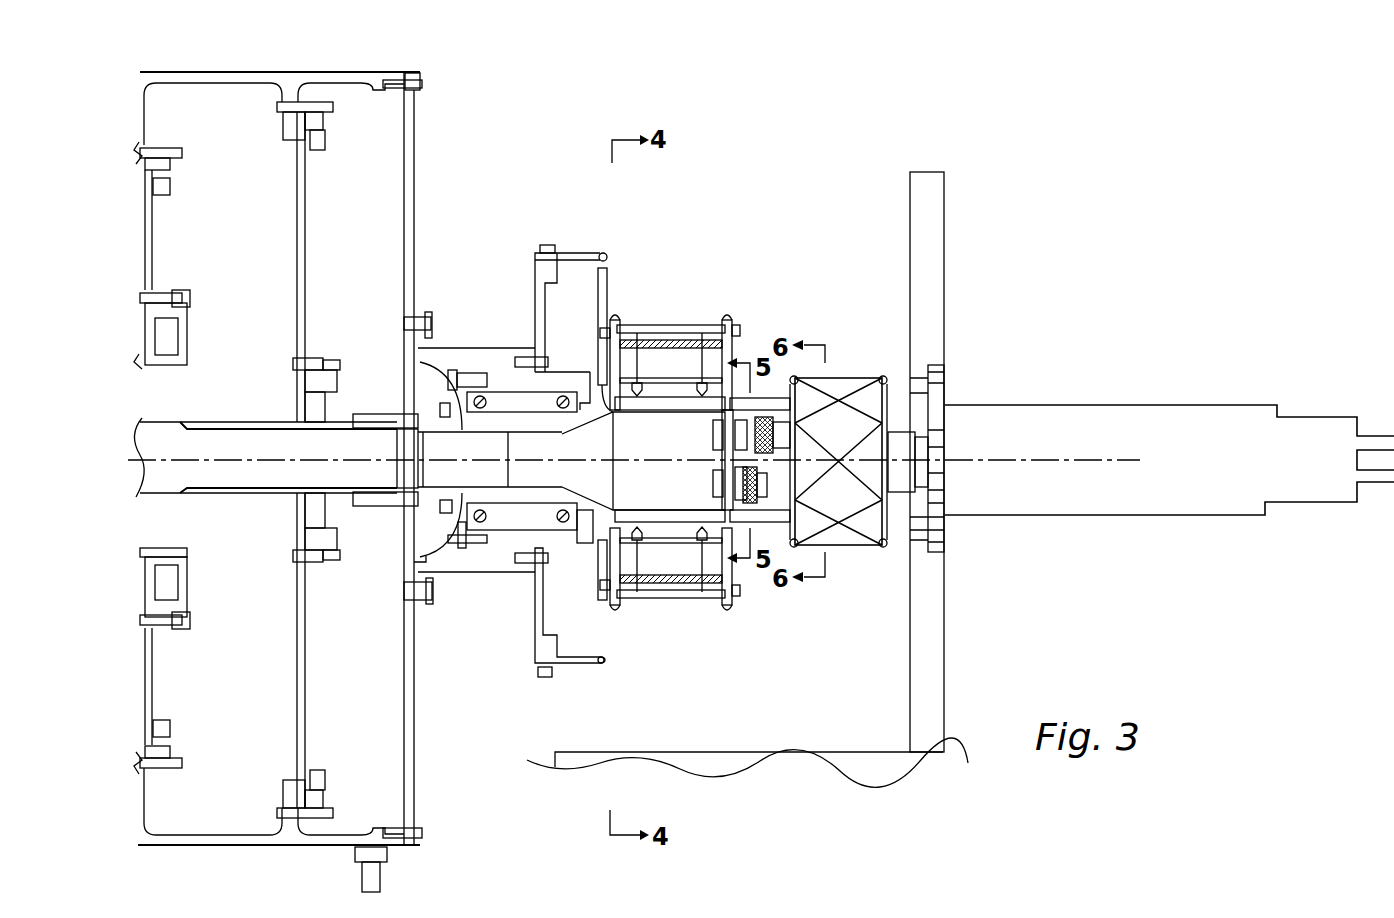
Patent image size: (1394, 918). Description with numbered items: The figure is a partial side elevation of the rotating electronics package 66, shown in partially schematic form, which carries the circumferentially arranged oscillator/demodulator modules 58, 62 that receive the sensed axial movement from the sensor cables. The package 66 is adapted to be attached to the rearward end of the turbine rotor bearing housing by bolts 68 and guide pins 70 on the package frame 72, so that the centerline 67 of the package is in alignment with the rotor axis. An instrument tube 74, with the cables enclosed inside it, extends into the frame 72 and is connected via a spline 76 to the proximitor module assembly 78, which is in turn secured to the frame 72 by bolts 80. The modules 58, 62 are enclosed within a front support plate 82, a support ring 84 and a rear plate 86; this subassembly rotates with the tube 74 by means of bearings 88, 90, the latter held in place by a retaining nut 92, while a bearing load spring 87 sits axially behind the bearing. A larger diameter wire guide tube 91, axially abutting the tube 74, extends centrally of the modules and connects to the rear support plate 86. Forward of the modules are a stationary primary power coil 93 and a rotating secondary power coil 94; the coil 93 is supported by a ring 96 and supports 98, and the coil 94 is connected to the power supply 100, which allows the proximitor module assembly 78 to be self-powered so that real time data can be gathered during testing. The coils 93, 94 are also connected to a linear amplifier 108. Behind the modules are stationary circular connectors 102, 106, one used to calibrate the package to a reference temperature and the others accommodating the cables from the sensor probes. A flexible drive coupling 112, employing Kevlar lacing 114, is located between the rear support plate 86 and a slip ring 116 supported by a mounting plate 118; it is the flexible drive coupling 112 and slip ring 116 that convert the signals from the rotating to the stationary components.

The oscillator/demodulator module 58 is at (656, 355).
The oscillator/demodulator module 62 is at (680, 573).
The electronics package 66 is at (768, 100).
The centerline 67 is at (309, 462).
The bolts 68 is at (170, 298).
The guide pins 70 is at (170, 150).
The package frame 72 is at (195, 66).
The instrument tube 74 is at (343, 428).
The spline 76 is at (462, 430).
The proximitor module assembly 78 is at (496, 210).
The bolts 80 is at (418, 328).
The front support plate 82 is at (612, 527).
The support ring 84 is at (652, 598).
The rear plate 86 is at (745, 592).
The bearing load spring 87 is at (580, 527).
The bearing 88 is at (478, 530).
The bearing 90 is at (603, 495).
The wire guide tube 91 is at (697, 512).
The retaining nut 92 is at (413, 562).
The stationary primary power coil 93 is at (603, 253).
The rotating secondary power coil 94 is at (608, 282).
The ring 96 is at (528, 622).
The supports 98 is at (597, 670).
The power supply 100 is at (592, 360).
The stationary circular connector 102 is at (717, 435).
The stationary circular connector 106 is at (717, 481).
The linear amplifier 108 is at (836, 380).
The flexible drive coupling 112 is at (1042, 412).
The Kevlar lacing 114 is at (858, 410).
The slip ring 116 is at (946, 174).
The mounting plate 118 is at (895, 760).